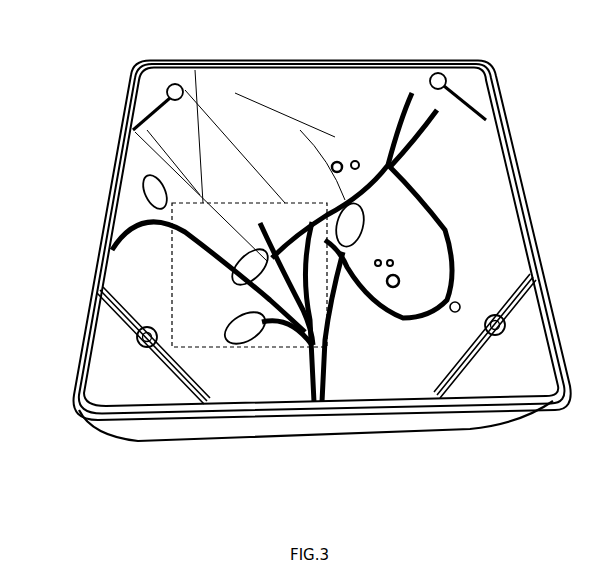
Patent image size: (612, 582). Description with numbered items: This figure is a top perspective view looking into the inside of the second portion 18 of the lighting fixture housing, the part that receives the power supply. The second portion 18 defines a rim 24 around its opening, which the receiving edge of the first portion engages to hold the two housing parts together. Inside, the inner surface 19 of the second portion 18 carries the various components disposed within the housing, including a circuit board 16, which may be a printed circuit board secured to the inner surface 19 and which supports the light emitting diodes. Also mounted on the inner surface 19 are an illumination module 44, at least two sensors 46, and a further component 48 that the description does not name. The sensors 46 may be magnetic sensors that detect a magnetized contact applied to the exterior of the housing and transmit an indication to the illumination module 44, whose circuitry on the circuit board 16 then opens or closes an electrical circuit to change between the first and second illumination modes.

The circuit board 16 is at (172, 205).
The second portion 18 is at (183, 440).
The inner surface 19 is at (408, 265).
The rim 24 is at (533, 277).
The illumination module 44 is at (133, 128).
The sensors 46 is at (103, 293).
The cable clip 48 is at (148, 186).